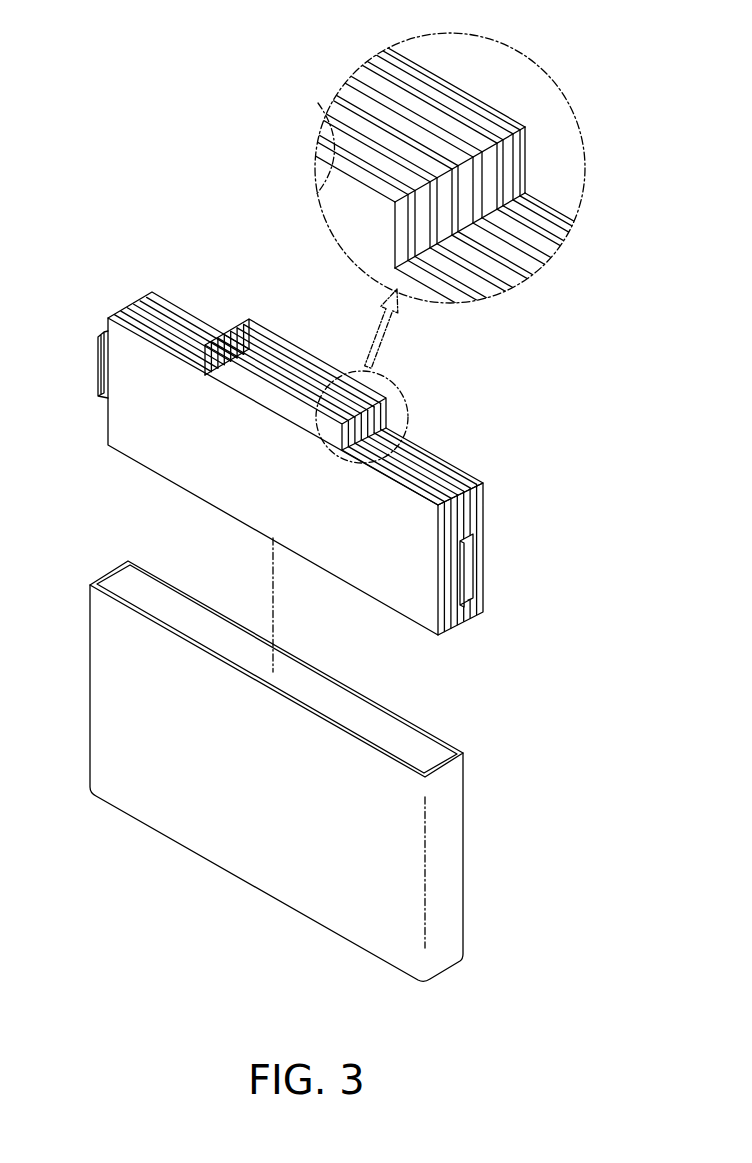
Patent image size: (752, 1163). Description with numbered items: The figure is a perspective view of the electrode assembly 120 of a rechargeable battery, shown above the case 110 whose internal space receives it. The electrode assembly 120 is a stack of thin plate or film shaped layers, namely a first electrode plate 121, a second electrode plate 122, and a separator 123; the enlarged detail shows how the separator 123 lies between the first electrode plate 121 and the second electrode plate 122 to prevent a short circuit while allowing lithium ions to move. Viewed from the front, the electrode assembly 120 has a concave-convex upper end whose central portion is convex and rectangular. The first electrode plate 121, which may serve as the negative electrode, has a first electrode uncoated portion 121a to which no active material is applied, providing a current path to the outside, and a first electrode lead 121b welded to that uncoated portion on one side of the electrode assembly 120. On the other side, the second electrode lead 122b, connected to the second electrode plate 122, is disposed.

The case 110 is at (447, 872).
The electrode assembly 120 is at (317, 475).
The first electrode plate 121 is at (336, 162).
The first electrode uncoated portion 121a is at (113, 388).
The first electrode lead 121b is at (100, 357).
The second electrode plate 122 is at (346, 98).
The second electrode lead 122b is at (465, 567).
The separator 123 is at (340, 118).